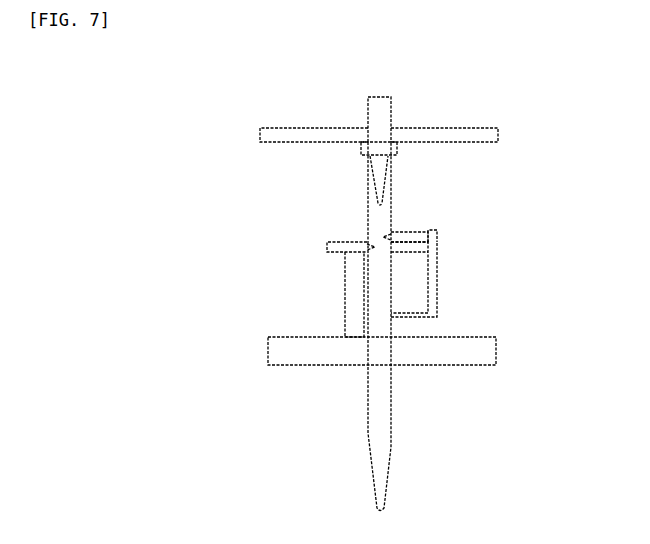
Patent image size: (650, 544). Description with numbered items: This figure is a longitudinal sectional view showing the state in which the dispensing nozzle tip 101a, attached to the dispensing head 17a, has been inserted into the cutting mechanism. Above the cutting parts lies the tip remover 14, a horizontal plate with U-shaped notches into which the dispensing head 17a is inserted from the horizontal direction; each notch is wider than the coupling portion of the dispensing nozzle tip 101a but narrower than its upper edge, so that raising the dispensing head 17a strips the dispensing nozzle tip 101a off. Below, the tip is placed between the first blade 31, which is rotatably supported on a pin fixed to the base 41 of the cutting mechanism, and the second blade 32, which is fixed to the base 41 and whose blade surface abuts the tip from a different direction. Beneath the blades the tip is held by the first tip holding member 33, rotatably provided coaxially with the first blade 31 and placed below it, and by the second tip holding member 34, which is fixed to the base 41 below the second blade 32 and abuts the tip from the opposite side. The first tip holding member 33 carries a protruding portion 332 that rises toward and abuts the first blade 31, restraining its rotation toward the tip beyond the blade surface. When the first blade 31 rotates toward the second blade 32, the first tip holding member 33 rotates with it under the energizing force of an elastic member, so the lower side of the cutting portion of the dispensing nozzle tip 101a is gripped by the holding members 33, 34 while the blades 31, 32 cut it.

The tip remover 14 is at (286, 130).
The dispensing head 17a is at (383, 121).
The dispensing nozzle tip 101a is at (383, 408).
The first blade 31 is at (408, 238).
The protruding portion 332 is at (434, 240).
The first tip holding member 33 is at (429, 286).
The second blade 32 is at (338, 247).
The second tip holding member 34 is at (349, 311).
The base 41 is at (486, 352).